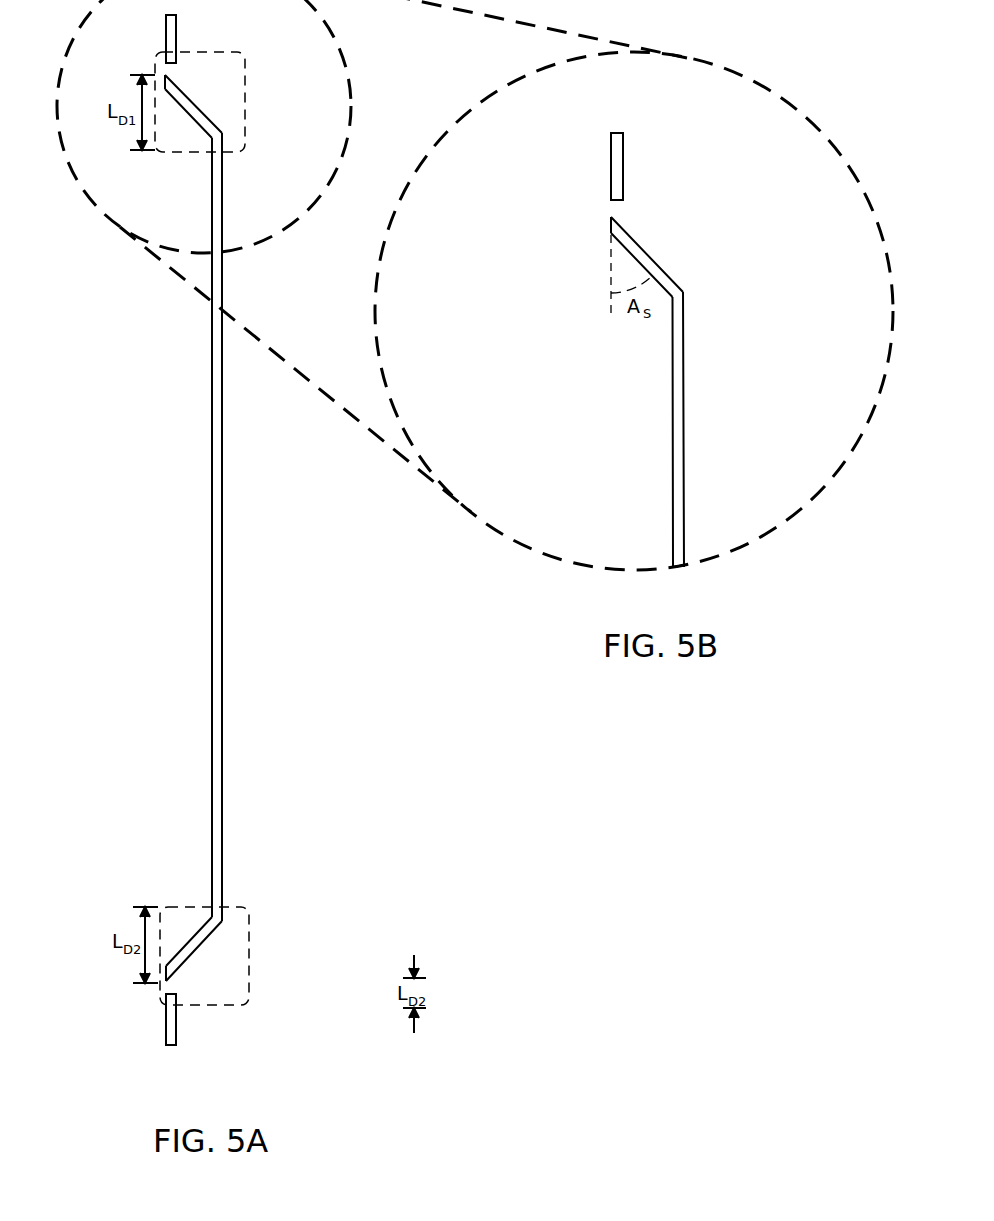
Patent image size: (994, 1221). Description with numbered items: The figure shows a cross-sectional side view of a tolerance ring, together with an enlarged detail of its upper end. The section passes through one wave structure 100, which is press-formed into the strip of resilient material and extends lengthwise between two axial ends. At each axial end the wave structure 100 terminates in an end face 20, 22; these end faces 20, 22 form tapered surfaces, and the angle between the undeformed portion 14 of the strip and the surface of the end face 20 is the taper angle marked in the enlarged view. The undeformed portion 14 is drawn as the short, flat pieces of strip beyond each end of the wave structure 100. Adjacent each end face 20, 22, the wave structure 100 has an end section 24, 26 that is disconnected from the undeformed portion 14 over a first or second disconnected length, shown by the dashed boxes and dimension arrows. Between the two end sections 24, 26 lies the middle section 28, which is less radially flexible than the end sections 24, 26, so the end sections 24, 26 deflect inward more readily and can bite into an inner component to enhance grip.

In FIG. 5A, the undeformed portion 14 is at (177, 35).
In FIG. 5B, the undeformed portion 14 is at (623, 175).
In FIG. 5B, the end face 20 is at (653, 258).
In FIG. 5A, the end face 22 is at (190, 962).
In FIG. 5A, the end section 24 is at (246, 98).
In FIG. 5A, the end section 26 is at (250, 931).
In FIG. 5A, the middle section 28 is at (223, 536).
In FIG. 5A, the wave structure 100 is at (239, 529).
In FIG. 5B, the wave structure 100 is at (686, 392).